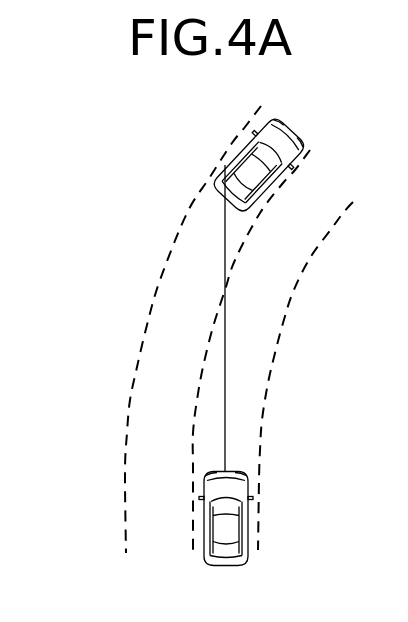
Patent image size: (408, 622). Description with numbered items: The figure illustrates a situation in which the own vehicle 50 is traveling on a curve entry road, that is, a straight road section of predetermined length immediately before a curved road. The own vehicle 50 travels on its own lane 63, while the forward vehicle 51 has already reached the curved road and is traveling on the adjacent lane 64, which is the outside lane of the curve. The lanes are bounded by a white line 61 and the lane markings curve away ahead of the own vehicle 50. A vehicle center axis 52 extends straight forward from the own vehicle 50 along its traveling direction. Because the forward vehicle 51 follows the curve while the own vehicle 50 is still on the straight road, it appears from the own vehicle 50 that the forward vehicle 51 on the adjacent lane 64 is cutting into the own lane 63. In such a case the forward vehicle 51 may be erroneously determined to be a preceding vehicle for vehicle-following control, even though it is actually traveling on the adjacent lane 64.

The own vehicle 50 is at (249, 530).
The forward vehicle 51 is at (240, 147).
The vehicle center axis 52 is at (226, 390).
The white line 61 is at (204, 368).
The own lane 63 is at (282, 285).
The adjacent lane 64 is at (190, 248).